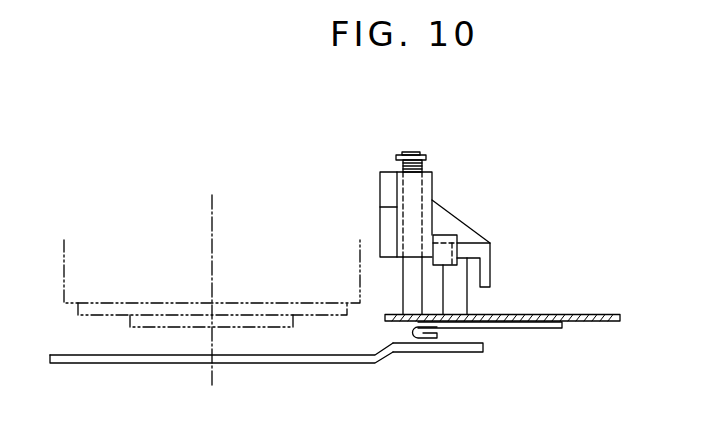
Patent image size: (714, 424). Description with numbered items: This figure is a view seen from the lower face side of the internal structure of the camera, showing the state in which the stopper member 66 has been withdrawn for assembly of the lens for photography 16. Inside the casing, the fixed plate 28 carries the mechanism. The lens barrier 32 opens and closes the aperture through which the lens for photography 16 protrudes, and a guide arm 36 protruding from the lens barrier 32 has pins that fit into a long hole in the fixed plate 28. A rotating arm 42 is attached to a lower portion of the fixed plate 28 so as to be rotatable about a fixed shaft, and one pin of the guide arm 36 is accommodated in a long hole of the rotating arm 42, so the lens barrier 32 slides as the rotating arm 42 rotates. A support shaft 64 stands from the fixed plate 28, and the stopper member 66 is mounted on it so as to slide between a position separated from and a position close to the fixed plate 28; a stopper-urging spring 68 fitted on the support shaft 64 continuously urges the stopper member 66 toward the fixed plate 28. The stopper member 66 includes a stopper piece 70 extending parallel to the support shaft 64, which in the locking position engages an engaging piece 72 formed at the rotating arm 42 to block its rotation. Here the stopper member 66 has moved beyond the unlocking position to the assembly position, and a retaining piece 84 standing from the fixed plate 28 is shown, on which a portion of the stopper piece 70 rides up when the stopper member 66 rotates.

The lens for photography 16 is at (63, 265).
The fixed plate 28 is at (586, 306).
The lens barrier 32 is at (122, 367).
The guide arm 36 is at (455, 353).
The rotating arm 42 is at (542, 335).
The support shaft 64 is at (412, 152).
The stopper member 66 is at (461, 216).
The stopper-urging spring 68 is at (423, 168).
The stopper piece 70 is at (493, 260).
The engaging piece 72 is at (413, 333).
The retaining piece 84 is at (467, 300).